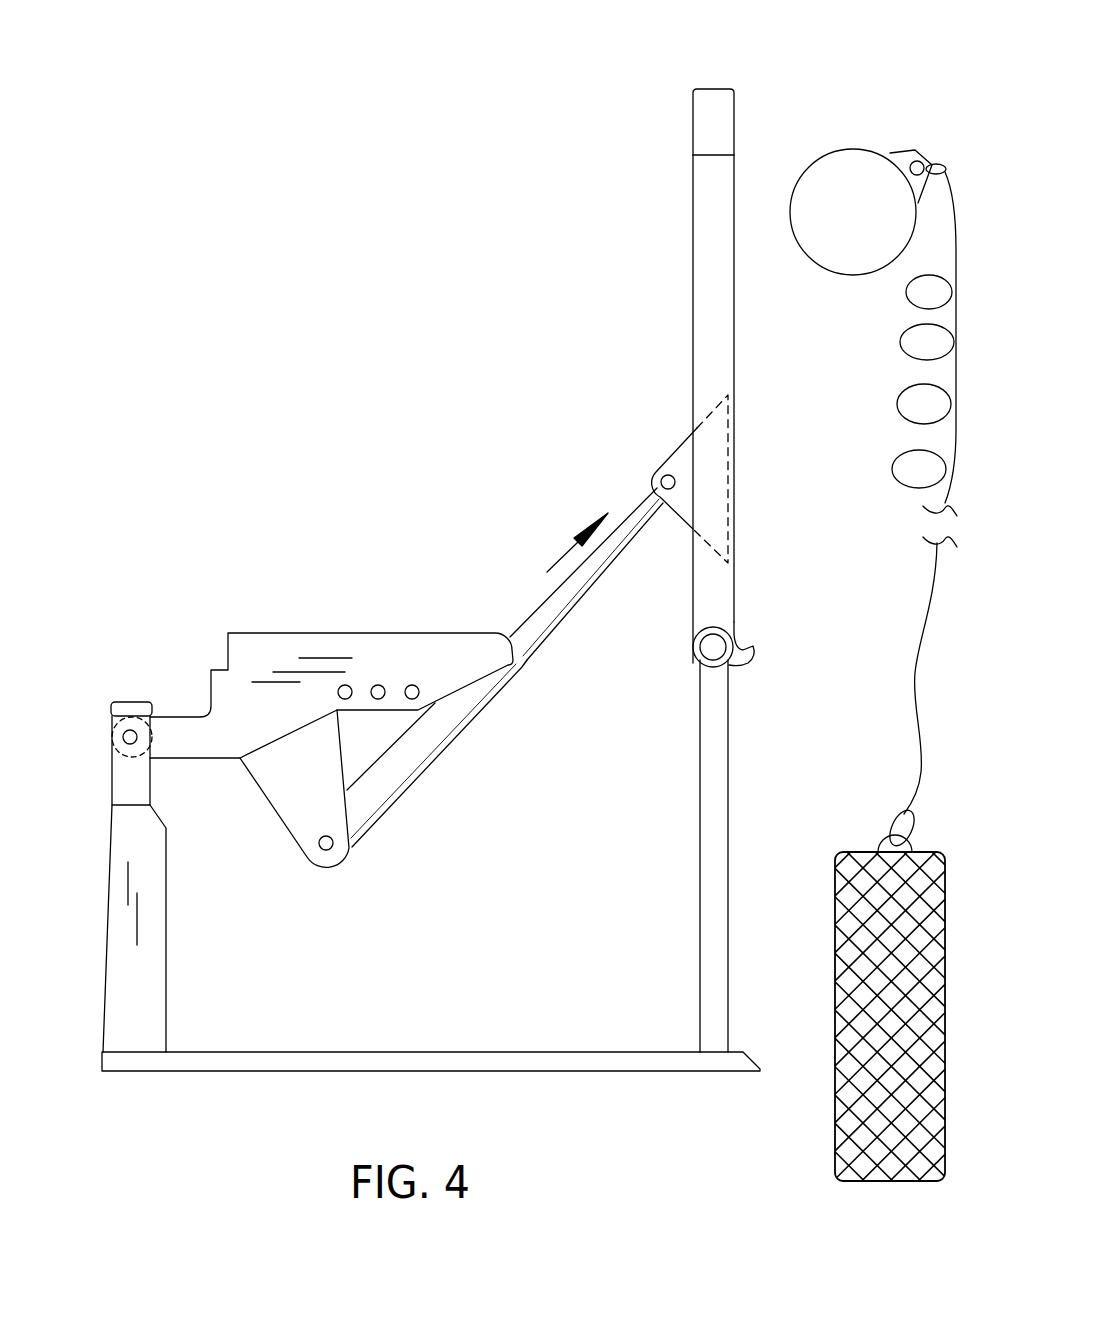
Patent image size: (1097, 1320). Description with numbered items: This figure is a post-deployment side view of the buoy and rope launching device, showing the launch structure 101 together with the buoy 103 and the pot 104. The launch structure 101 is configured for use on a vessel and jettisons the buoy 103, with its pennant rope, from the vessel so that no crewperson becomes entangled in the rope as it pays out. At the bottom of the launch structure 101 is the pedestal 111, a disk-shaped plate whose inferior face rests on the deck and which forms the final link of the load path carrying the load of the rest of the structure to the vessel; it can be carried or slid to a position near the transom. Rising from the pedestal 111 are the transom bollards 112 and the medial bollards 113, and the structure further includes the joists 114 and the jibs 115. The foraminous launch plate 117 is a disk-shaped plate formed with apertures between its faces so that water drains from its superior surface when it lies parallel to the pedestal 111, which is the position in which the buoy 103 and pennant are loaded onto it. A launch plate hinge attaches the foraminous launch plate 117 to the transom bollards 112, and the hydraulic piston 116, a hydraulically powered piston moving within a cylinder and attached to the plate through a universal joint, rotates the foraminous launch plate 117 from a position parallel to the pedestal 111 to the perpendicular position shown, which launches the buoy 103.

The launch structure 101 is at (309, 200).
The buoy 103 is at (853, 160).
The pot 104 is at (837, 1058).
The pedestal 111 is at (435, 1058).
The transom bollards 112 is at (717, 792).
The medial bollards 113 is at (120, 893).
The joists 114 is at (300, 653).
The jibs 115 is at (335, 850).
The hydraulic piston 116 is at (455, 732).
The foraminous launch plate 117 is at (720, 198).